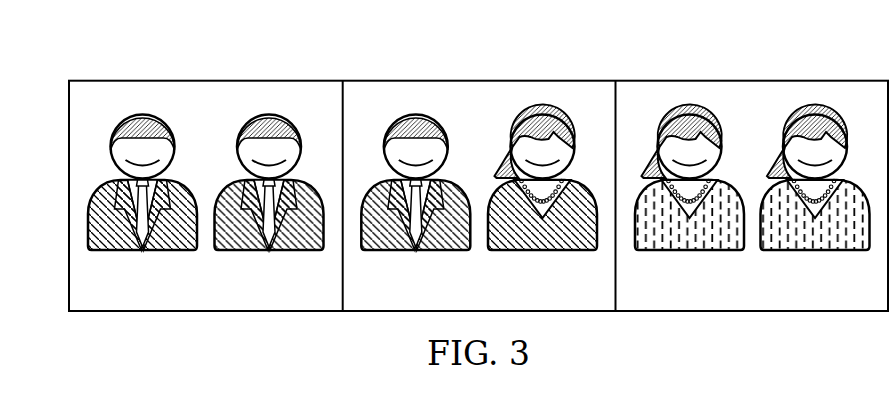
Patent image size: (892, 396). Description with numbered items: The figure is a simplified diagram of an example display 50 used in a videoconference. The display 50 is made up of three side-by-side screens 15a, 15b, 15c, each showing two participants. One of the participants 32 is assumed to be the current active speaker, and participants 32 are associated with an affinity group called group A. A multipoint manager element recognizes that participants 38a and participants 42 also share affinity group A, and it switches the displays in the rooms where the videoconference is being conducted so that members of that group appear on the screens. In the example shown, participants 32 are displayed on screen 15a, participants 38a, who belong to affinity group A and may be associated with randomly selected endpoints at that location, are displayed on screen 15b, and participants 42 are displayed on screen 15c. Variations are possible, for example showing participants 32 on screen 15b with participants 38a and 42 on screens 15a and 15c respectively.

The display 50 is at (563, 80).
The screen 15a is at (205, 88).
The screen 15b is at (479, 88).
The screen 15c is at (754, 88).
The participants 32 is at (258, 250).
The participants 38a is at (547, 250).
The participants 42 is at (818, 250).